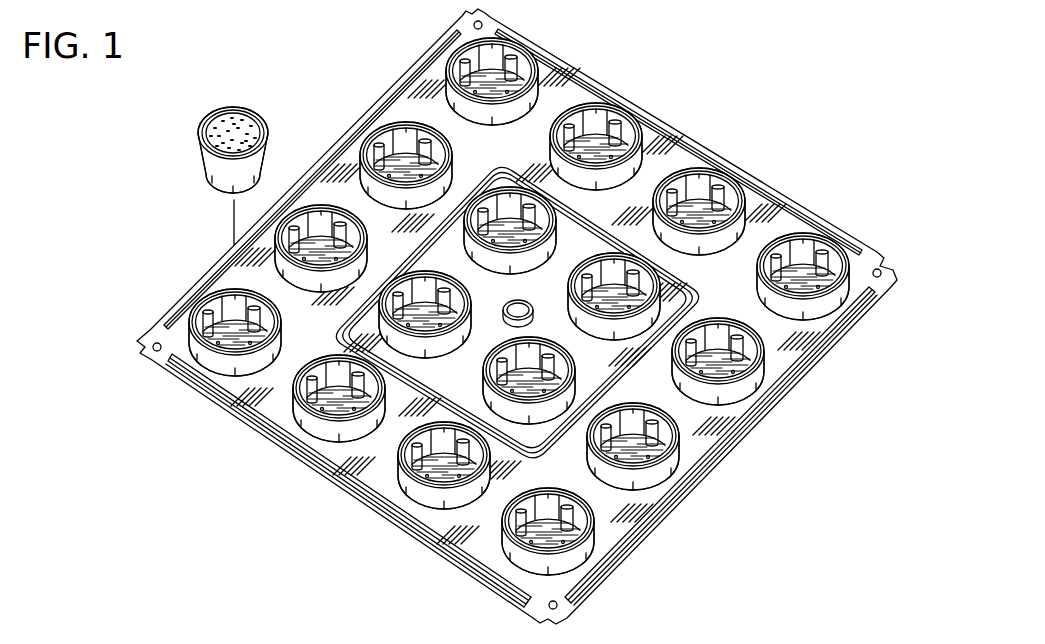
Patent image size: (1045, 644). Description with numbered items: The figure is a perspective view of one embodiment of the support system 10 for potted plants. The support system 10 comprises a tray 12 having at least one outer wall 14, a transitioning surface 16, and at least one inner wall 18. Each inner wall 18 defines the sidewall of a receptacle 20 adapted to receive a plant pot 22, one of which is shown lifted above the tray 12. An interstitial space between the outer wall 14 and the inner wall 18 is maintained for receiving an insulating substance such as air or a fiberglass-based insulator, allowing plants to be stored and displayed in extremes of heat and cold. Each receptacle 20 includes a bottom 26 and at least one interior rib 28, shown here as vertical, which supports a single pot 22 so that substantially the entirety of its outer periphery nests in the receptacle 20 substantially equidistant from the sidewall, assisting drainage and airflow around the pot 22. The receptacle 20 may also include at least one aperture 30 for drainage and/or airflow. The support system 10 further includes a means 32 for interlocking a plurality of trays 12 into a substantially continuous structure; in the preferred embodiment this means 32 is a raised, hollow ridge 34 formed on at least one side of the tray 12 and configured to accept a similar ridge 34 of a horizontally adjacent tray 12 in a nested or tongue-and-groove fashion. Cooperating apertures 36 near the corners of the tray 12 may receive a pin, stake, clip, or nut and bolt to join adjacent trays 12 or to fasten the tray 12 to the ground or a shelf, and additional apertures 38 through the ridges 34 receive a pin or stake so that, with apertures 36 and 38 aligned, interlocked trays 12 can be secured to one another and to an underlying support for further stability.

The support system 10 is at (322, 82).
The tray 12 is at (221, 412).
The outer wall 14 is at (778, 355).
The transitioning surface 16 is at (752, 334).
The inner wall 18 is at (721, 337).
The receptacle 20 is at (762, 353).
The plant pot 22 is at (198, 143).
The bottom 26 is at (317, 407).
The interior rib 28 is at (409, 453).
The aperture 30 is at (698, 208).
The means for interlocking 32 is at (503, 595).
The raised, hollow ridge 34 is at (437, 538).
The aperture 36 is at (481, 22).
The aperture 38 is at (643, 110).